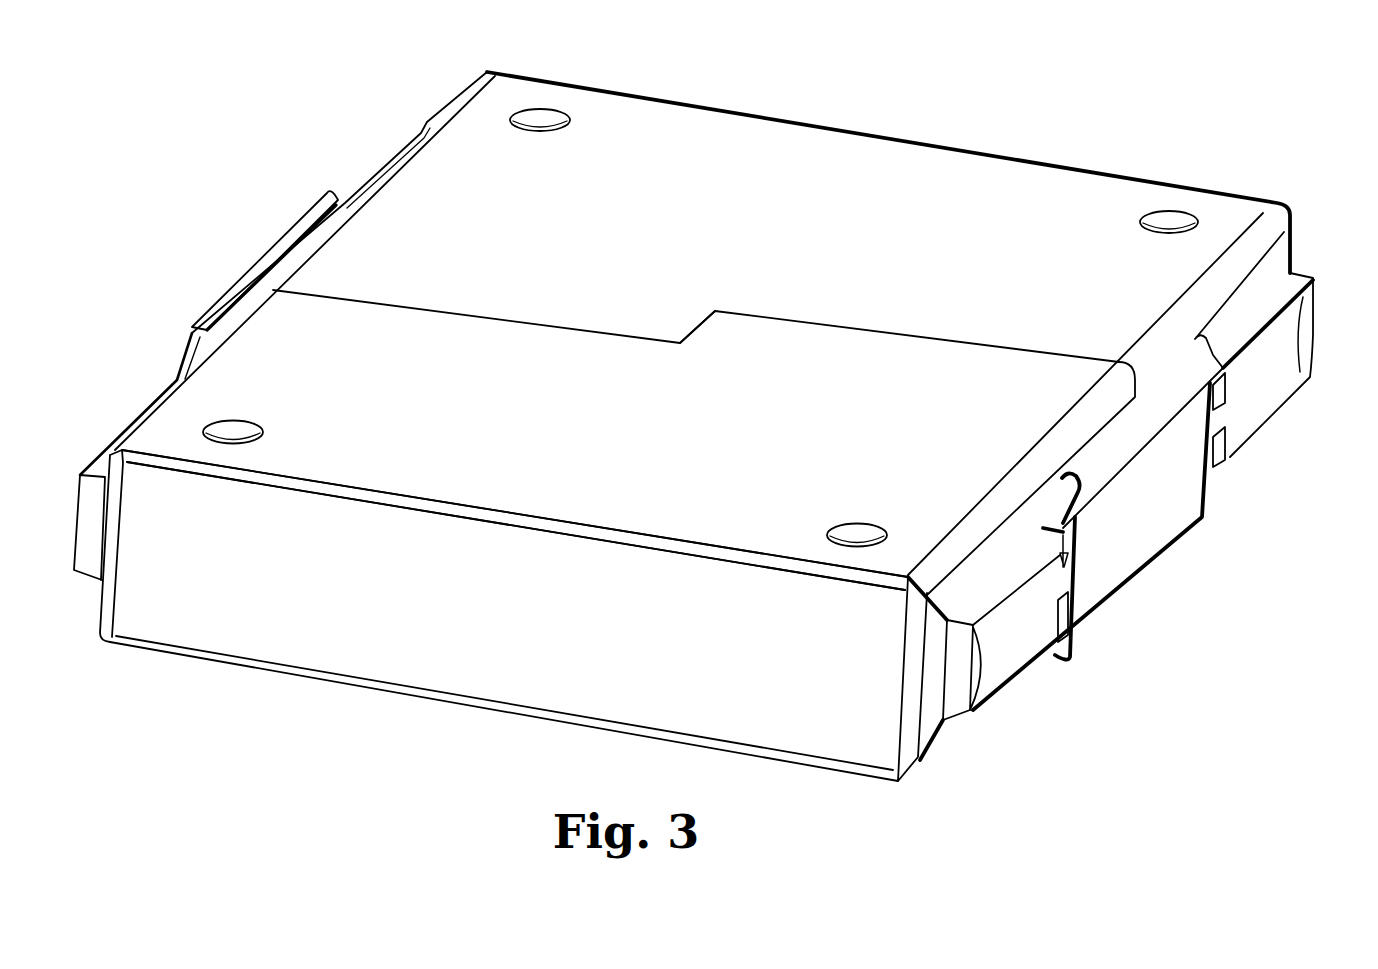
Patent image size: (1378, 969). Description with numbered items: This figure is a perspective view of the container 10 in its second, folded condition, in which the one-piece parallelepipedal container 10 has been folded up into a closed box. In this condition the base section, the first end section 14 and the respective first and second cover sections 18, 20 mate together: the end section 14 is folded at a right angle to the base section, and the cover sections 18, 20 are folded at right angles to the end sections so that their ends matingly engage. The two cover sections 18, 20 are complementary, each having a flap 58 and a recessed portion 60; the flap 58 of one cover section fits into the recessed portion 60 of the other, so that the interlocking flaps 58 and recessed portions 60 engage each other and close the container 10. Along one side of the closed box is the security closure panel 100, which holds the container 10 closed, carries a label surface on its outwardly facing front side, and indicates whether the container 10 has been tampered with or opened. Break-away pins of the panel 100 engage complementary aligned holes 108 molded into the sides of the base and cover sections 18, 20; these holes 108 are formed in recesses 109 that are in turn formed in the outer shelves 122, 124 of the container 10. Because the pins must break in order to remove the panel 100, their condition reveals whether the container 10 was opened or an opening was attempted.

The container 10 is at (1118, 145).
The first end section 14 is at (703, 681).
The first cover section 18 is at (555, 488).
The second cover section 20 is at (950, 182).
The flap 58 is at (665, 322).
The recessed portion 60 is at (808, 312).
The security closure panel 100 is at (1155, 550).
The holes 108 is at (1077, 560).
The recesses 109 is at (1063, 560).
The outer shelf 122 is at (982, 597).
The outer shelf 124 is at (985, 687).